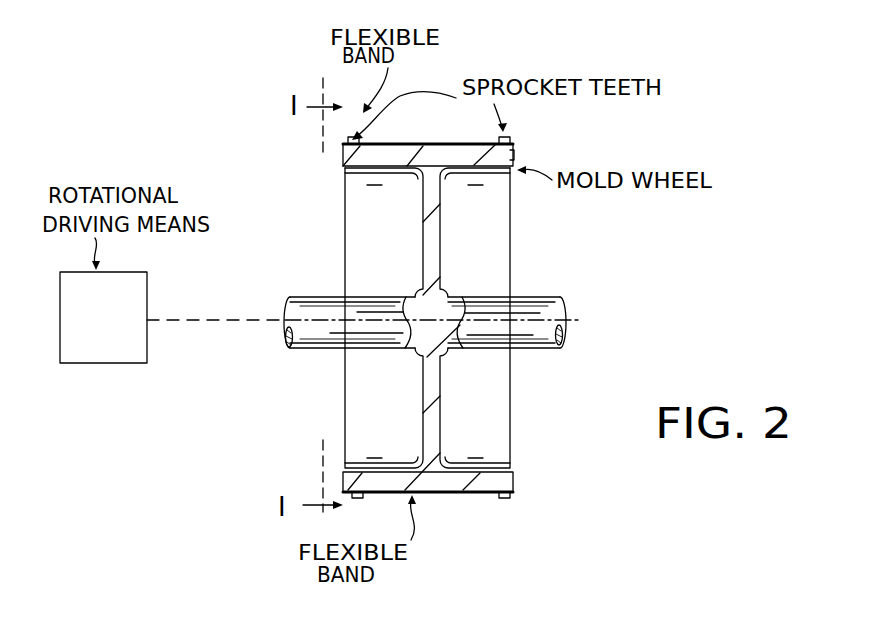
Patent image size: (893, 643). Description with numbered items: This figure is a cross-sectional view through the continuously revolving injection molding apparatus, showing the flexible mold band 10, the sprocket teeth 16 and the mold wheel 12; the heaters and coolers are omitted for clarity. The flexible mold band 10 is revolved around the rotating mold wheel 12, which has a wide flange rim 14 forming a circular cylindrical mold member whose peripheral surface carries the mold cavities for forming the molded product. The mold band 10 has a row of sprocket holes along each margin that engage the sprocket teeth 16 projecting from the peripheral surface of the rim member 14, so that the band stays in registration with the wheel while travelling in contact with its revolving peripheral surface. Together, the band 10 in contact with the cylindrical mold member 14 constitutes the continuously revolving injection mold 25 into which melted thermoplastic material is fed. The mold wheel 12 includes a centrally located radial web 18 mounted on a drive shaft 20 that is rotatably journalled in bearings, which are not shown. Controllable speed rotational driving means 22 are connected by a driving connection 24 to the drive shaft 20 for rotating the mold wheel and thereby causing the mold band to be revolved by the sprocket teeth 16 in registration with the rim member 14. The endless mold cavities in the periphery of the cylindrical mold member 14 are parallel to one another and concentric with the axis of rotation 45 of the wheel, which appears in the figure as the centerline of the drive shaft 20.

The flexible mold band 10 is at (455, 143).
The mold wheel 12 is at (517, 222).
The flange rim 14 is at (474, 163).
The sprocket teeth 16 is at (362, 143).
The radial web 18 is at (422, 250).
The drive shaft 20 is at (311, 297).
The rotational driving means 22 is at (146, 271).
The driving connection 24 is at (208, 326).
The injection mold 25 is at (527, 155).
The axis of rotation 45 is at (319, 348).